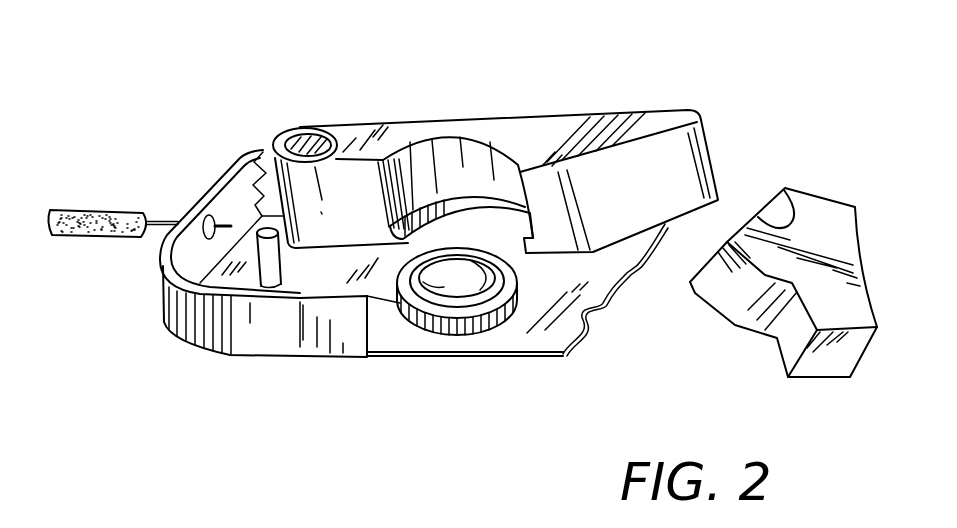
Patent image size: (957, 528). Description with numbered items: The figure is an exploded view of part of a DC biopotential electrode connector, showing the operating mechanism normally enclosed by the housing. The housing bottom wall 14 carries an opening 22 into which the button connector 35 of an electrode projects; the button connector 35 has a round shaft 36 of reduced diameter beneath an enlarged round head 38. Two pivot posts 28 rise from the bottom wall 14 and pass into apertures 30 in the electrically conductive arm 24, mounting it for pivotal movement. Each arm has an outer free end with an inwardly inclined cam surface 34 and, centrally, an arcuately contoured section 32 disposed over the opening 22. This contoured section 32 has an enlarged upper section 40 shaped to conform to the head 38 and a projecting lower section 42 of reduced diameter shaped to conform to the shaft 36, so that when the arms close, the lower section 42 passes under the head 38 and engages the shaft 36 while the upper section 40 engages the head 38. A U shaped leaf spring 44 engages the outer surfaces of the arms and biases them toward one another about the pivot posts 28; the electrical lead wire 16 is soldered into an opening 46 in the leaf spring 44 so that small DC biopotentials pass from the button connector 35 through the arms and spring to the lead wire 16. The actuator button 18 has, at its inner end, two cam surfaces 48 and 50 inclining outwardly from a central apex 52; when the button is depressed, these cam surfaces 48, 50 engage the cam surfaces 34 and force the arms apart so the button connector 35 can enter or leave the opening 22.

The bottom wall 14 is at (545, 292).
The electrical lead wire 16 is at (100, 240).
The actuator button 18 is at (841, 257).
The opening 22 is at (397, 312).
The first electrically conductive arm 24 is at (565, 132).
The pivot posts 28 is at (313, 138).
The apertures 30 is at (282, 135).
The arcuately contoured section 32 is at (445, 135).
The cam surface 34 is at (670, 208).
The button connector 35 is at (483, 285).
The round shaft 36 is at (472, 332).
The enlarged round head 38 is at (431, 307).
The enlarged upper section 40 is at (505, 152).
The projecting lower section 42 is at (426, 222).
The U shaped leaf spring 44 is at (235, 183).
The opening in the leaf spring 46 is at (216, 224).
The cam surface 48 is at (758, 236).
The cam surface 50 is at (738, 303).
The central apex 52 is at (698, 285).